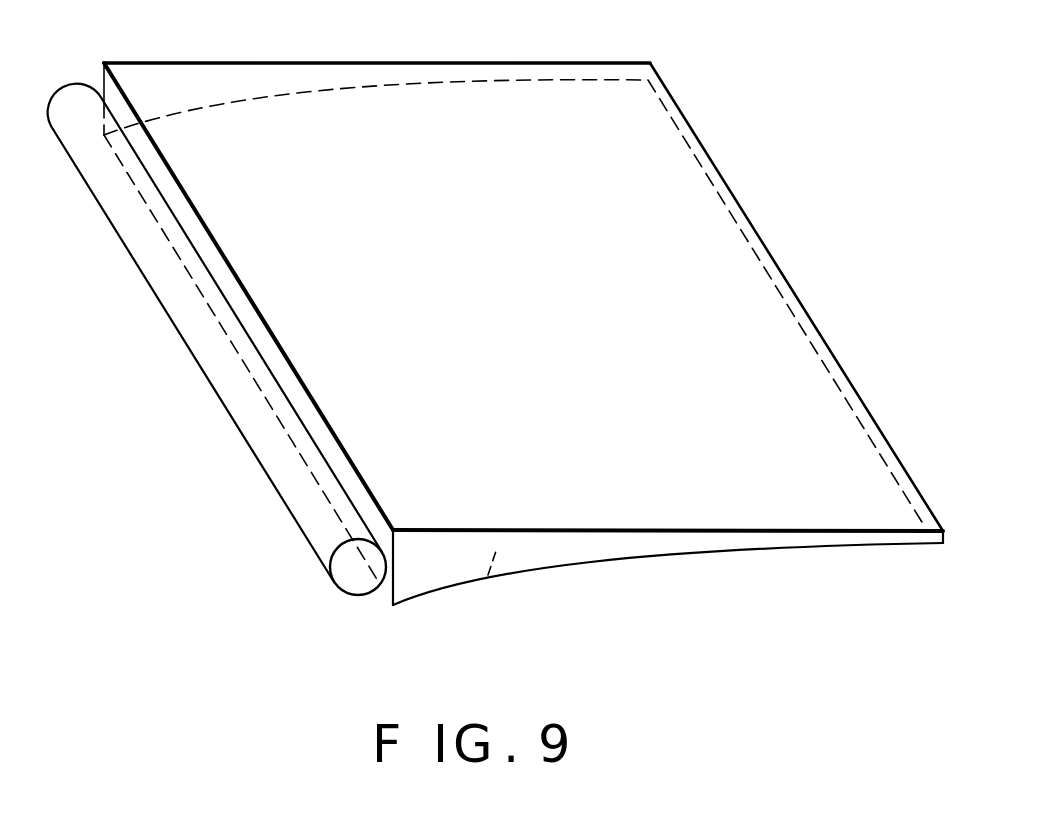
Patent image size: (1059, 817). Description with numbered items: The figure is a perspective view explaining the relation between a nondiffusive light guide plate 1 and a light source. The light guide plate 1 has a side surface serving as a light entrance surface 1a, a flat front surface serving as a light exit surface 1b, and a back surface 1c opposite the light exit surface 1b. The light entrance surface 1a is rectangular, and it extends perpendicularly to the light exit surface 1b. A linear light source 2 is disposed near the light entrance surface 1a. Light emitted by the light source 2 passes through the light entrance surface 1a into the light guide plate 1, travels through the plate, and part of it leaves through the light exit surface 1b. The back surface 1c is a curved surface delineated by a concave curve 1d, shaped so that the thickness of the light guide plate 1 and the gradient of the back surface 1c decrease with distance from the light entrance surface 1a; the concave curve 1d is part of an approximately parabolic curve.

The nondiffusive light guide plate 1 is at (494, 333).
The light entrance surface 1a is at (117, 103).
The light exit surface 1b is at (423, 97).
The back surface 1c is at (489, 573).
The concave curve 1d is at (585, 562).
The linear light source 2 is at (350, 578).